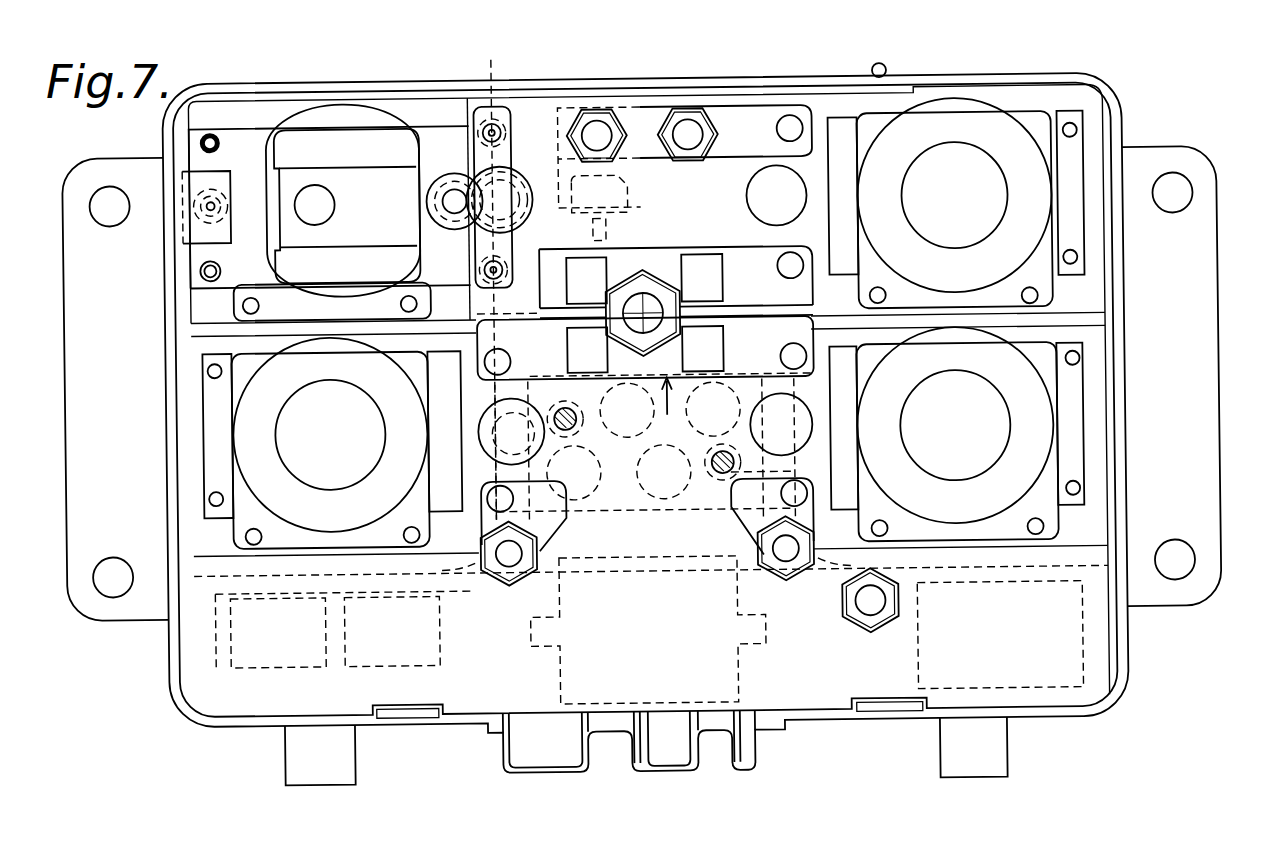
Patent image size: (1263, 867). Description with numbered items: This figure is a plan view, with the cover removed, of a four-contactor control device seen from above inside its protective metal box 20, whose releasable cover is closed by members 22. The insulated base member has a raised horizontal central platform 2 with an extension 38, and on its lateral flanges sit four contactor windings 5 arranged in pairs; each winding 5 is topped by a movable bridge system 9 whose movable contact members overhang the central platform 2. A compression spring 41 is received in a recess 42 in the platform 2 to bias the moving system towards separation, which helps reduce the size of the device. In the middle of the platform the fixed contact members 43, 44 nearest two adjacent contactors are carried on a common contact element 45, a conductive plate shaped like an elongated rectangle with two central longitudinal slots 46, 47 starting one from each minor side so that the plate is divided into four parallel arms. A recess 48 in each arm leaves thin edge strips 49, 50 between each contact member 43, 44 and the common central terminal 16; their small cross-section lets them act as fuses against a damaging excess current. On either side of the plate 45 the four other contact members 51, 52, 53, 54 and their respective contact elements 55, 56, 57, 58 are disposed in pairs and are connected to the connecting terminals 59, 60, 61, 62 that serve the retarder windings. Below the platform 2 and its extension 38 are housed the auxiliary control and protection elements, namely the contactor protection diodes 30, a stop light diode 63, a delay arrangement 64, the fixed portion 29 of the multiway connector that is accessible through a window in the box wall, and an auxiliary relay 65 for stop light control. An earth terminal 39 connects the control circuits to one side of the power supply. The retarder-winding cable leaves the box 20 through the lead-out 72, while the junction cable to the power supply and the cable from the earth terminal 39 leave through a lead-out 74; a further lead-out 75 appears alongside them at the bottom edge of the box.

The central platform 2 is at (655, 110).
The contactor winding 5 is at (332, 442).
The movable bridge system 9 is at (357, 172).
The common central terminal 16 is at (646, 303).
The box 20 is at (1116, 130).
The closing members 22 is at (336, 749).
The fixed connector part 29 is at (705, 679).
The contactor protection diodes 30 is at (587, 480).
The extension 38 is at (250, 692).
The earth terminal 39 is at (868, 618).
The compression spring 41 is at (512, 185).
The recess 42 is at (771, 196).
The fixed contact member 43 is at (786, 357).
The fixed contact member 44 is at (786, 263).
The common contact element 45 is at (667, 411).
The longitudinal slot 46 is at (750, 311).
The longitudinal slot 47 is at (535, 320).
The recess 48 is at (701, 268).
The edge strip 49 is at (585, 304).
The edge strip 50 is at (581, 257).
The contact member 51 is at (783, 500).
The contact member 52 is at (499, 497).
The contact member 53 is at (795, 126).
The contact member 54 is at (496, 105).
The contact element 55 is at (713, 572).
The contact element 56 is at (541, 535).
The contact element 57 is at (752, 124).
The contact element 58 is at (527, 113).
The connecting terminal 59 is at (790, 552).
The connecting terminal 60 is at (508, 553).
The connecting terminal 61 is at (693, 125).
The connecting terminal 62 is at (594, 127).
The stop light diode 63 is at (616, 193).
The delay arrangement 64 is at (292, 641).
The auxiliary relay 65 is at (1044, 677).
The lead-out 72 is at (523, 750).
The lead-out 74 is at (664, 753).
The connector pocket 75 is at (736, 755).